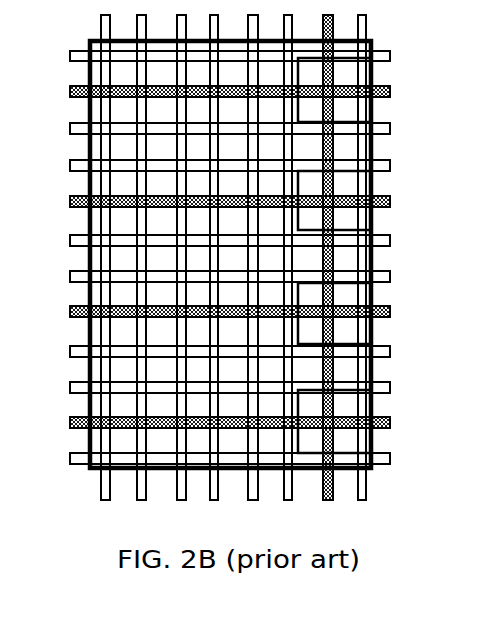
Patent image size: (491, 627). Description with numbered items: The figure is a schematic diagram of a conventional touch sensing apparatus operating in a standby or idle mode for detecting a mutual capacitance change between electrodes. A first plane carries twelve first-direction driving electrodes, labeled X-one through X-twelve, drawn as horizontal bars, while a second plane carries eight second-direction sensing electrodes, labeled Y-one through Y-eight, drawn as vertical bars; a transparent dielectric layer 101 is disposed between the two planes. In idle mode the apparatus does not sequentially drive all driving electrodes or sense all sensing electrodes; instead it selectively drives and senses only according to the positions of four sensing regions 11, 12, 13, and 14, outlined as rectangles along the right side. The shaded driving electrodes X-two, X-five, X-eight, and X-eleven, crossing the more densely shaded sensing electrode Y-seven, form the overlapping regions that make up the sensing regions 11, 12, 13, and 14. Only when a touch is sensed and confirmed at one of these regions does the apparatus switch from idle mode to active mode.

The sensing region 11 is at (348, 447).
The sensing region 12 is at (356, 335).
The sensing region 13 is at (372, 187).
The sensing region 14 is at (370, 80).
The transparent dielectric layer 101 is at (157, 442).